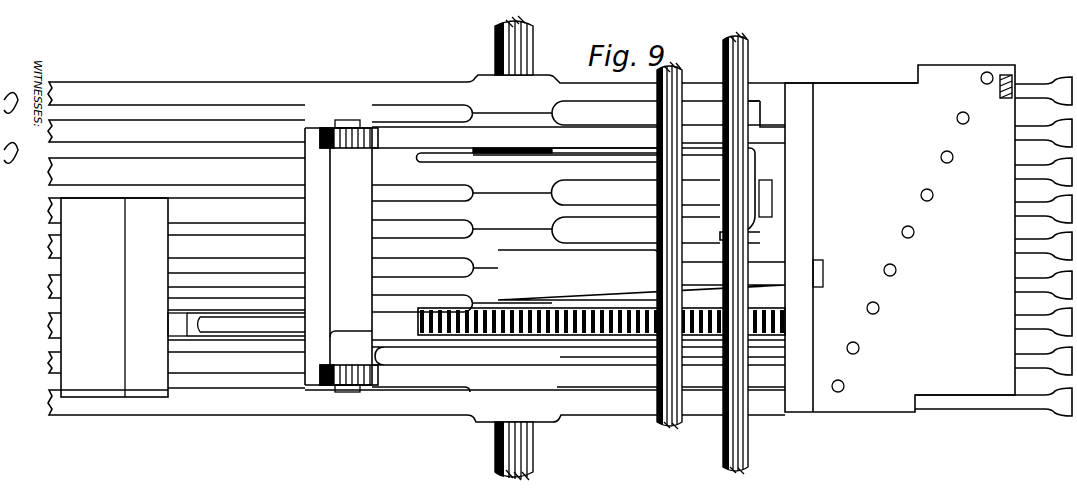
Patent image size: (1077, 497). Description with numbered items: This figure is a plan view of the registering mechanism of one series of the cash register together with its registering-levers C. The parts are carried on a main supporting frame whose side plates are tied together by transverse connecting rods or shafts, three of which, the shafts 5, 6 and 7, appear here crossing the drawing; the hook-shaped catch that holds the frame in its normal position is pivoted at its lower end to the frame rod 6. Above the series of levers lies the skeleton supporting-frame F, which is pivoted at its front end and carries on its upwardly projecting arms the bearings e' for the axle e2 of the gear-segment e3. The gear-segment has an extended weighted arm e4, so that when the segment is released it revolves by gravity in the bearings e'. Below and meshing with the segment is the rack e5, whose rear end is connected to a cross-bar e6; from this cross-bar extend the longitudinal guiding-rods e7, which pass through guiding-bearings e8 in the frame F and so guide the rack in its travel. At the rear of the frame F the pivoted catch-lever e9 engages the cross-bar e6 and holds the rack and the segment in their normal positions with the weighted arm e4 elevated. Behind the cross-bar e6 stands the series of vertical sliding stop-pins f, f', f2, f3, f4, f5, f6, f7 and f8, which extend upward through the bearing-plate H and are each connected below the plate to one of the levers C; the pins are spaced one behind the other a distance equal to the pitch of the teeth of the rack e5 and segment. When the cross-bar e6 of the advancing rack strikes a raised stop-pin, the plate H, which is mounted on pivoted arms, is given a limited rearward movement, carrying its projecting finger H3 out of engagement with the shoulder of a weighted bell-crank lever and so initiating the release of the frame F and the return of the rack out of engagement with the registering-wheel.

The levers C is at (91, 297).
The bearings e' is at (334, 249).
The axle e2 is at (338, 256).
The gear-segment e3 is at (408, 340).
The weighted arm e4 is at (218, 319).
The rack e5 is at (745, 348).
The cross-bar e6 is at (800, 323).
The guiding-rods e7 is at (606, 160).
The guiding-bearings e8 is at (765, 150).
The catch-lever e9 is at (641, 275).
The skeleton supporting-frame F is at (455, 378).
The transverse connecting rod or shaft 5 is at (522, 455).
The transverse connecting rod or shaft 6 is at (662, 420).
The transverse connecting rod or shaft 7 is at (740, 450).
The bearing-plate H is at (900, 238).
The projecting finger H3 is at (1004, 100).
The stop-pin f is at (831, 386).
The stop-pin f' is at (845, 348).
The stop-pin f2 is at (867, 308).
The stop-pin f3 is at (884, 270).
The stop-pin f4 is at (902, 232).
The stop-pin f5 is at (921, 195).
The stop-pin f6 is at (941, 157).
The stop-pin f7 is at (957, 118).
The stop-pin f8 is at (981, 78).